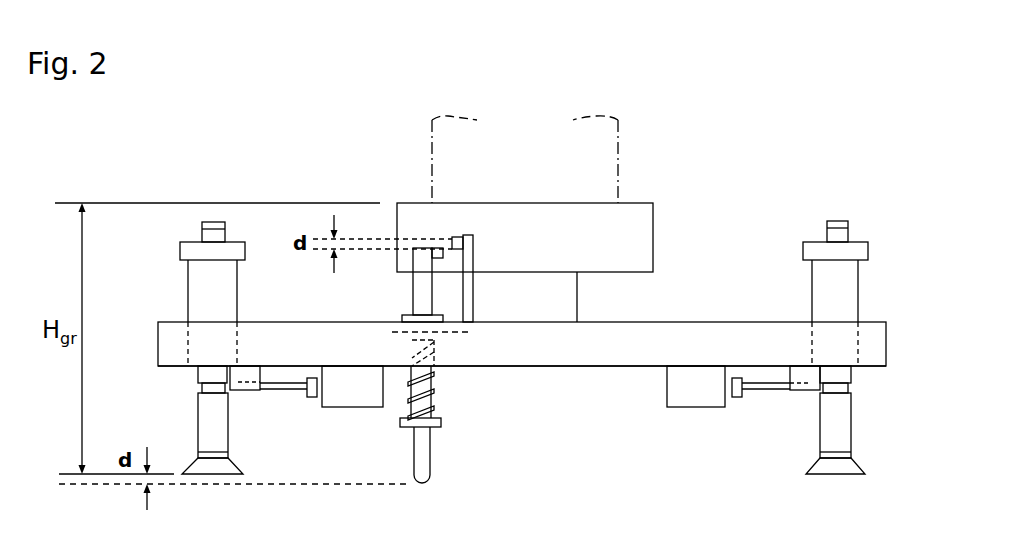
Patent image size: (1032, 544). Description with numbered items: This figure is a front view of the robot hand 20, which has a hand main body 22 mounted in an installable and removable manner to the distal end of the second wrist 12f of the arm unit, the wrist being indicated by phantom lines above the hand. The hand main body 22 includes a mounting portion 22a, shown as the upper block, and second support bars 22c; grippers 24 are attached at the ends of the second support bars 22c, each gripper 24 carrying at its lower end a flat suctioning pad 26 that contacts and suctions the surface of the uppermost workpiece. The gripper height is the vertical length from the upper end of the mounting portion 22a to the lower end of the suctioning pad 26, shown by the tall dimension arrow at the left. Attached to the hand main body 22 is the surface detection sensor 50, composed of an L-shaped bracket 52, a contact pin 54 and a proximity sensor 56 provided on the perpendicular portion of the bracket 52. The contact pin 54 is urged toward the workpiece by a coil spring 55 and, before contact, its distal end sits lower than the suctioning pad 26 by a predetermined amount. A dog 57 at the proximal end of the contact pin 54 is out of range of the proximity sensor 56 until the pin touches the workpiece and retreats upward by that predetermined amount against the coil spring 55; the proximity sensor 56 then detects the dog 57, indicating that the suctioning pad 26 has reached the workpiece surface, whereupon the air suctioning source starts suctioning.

The second wrist 12f is at (431, 152).
The robot hand 20 is at (568, 219).
The hand main body 22 is at (553, 372).
The mounting portion 22a is at (653, 229).
The second support bar 22c is at (617, 372).
The gripper 24 is at (151, 288).
The suctioning pad 26 is at (213, 474).
The surface detection sensor 50 is at (517, 236).
The bracket 52 is at (473, 297).
The contact pin 54 is at (432, 462).
The coil spring 55 is at (438, 389).
The proximity sensor 56 is at (457, 237).
The dog 57 is at (433, 254).